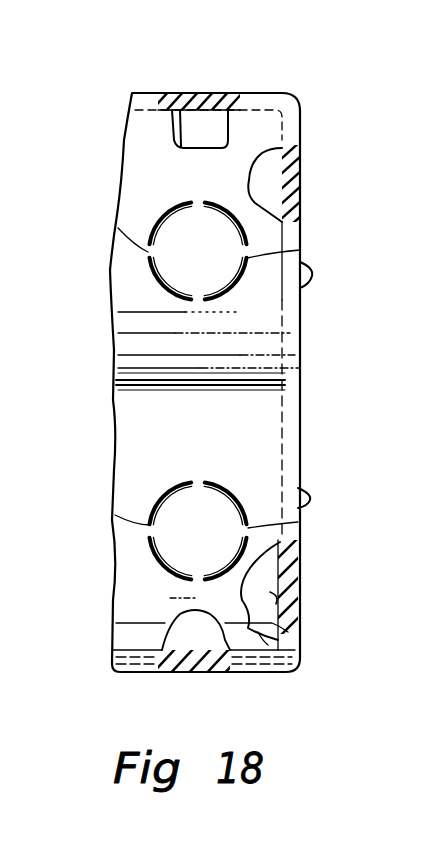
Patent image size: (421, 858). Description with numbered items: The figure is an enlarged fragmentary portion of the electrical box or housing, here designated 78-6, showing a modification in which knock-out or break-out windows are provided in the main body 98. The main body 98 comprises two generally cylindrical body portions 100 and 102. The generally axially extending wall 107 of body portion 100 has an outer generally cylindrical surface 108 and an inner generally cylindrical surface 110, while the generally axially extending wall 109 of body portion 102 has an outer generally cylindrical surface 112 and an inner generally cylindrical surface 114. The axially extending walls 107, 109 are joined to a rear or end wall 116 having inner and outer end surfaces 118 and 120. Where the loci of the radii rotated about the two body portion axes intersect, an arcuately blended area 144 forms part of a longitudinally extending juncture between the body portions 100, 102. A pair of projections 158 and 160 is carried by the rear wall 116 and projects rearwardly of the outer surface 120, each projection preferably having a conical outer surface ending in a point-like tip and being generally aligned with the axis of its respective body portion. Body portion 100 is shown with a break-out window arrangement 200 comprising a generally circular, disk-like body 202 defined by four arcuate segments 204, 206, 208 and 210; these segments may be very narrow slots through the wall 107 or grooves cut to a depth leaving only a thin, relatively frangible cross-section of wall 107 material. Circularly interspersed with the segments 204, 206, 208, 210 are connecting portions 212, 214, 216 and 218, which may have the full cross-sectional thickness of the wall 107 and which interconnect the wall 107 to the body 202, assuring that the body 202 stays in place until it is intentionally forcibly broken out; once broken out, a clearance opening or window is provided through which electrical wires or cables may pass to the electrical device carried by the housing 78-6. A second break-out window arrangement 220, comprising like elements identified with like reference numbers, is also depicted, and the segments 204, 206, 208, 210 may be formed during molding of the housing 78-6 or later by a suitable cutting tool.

The electrical box or housing 78-6 is at (300, 72).
The main body 98 is at (142, 408).
The first cylindrical body portion 100 is at (145, 150).
The second cylindrical body portion 102 is at (258, 632).
The axially extending wall 107 is at (225, 93).
The outer cylindrical surface 108 is at (152, 93).
The axially extending wall 109 is at (190, 674).
The inner cylindrical surface 110 is at (184, 130).
The outer cylindrical surface 112 is at (120, 674).
The inner cylindrical surface 114 is at (155, 665).
The rear end wall 116 is at (300, 152).
The inner end surface 118 is at (288, 600).
The outer end surface 120 is at (296, 567).
The arcuately blended intersection area 144 is at (178, 380).
The projection 158 is at (312, 279).
The projection 160 is at (308, 497).
The break-out window arrangement 200 is at (135, 263).
The circular disk-like body 202 is at (212, 268).
The arcuate segment 204 is at (163, 215).
The arcuate segment 206 is at (242, 233).
The arcuate segment 208 is at (243, 292).
The arcuate segment 210 is at (165, 285).
The connecting portion 212 is at (118, 228).
The connecting portion 214 is at (198, 200).
The connecting portion 216 is at (300, 250).
The connecting portion 218 is at (198, 302).
The second break-out window arrangement 220 is at (143, 560).